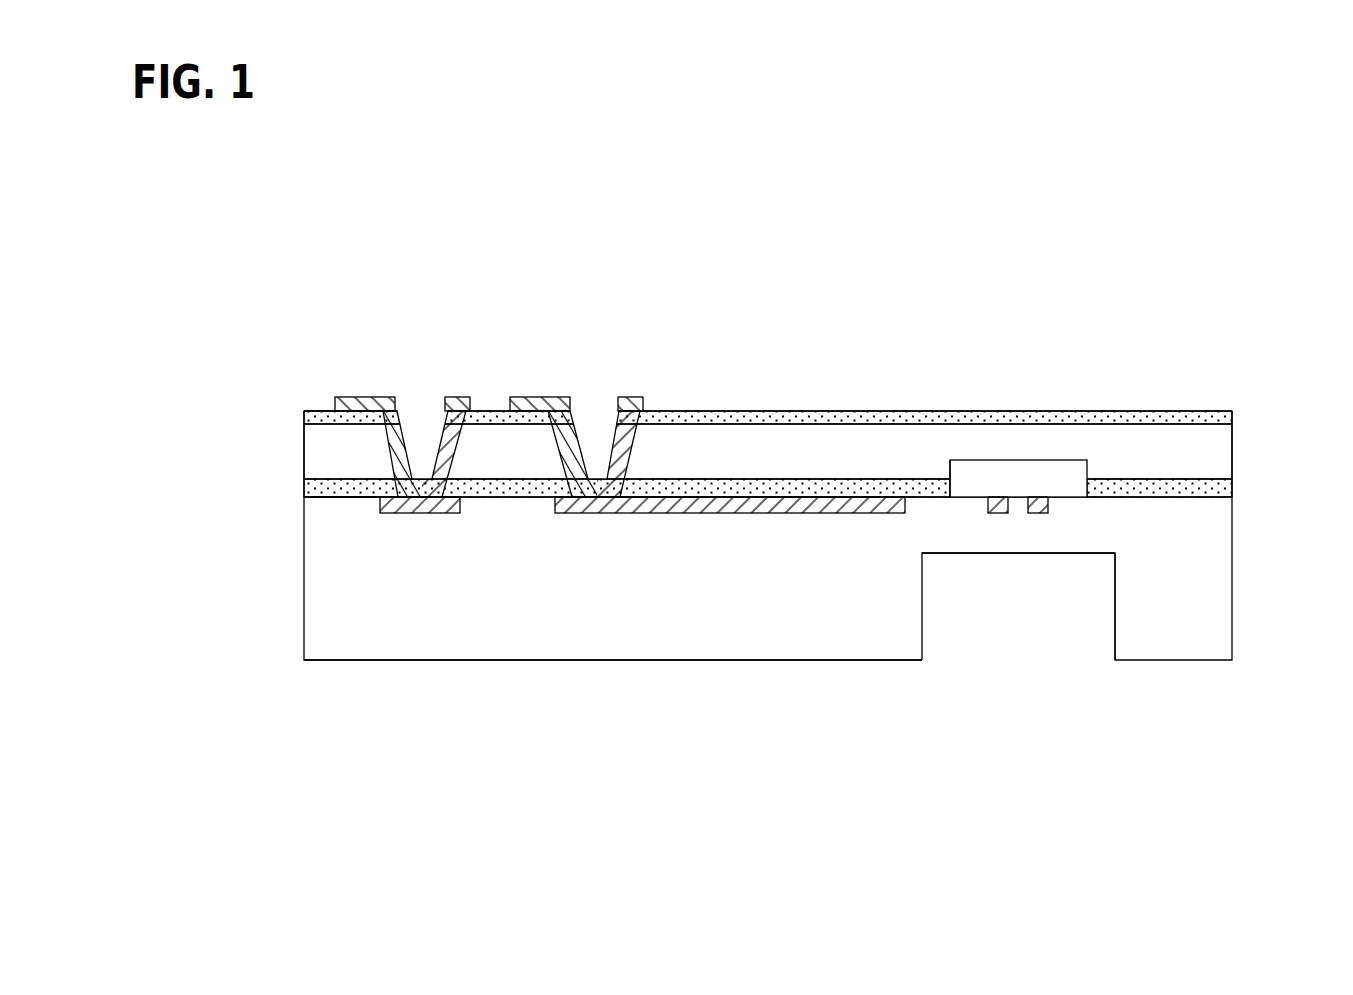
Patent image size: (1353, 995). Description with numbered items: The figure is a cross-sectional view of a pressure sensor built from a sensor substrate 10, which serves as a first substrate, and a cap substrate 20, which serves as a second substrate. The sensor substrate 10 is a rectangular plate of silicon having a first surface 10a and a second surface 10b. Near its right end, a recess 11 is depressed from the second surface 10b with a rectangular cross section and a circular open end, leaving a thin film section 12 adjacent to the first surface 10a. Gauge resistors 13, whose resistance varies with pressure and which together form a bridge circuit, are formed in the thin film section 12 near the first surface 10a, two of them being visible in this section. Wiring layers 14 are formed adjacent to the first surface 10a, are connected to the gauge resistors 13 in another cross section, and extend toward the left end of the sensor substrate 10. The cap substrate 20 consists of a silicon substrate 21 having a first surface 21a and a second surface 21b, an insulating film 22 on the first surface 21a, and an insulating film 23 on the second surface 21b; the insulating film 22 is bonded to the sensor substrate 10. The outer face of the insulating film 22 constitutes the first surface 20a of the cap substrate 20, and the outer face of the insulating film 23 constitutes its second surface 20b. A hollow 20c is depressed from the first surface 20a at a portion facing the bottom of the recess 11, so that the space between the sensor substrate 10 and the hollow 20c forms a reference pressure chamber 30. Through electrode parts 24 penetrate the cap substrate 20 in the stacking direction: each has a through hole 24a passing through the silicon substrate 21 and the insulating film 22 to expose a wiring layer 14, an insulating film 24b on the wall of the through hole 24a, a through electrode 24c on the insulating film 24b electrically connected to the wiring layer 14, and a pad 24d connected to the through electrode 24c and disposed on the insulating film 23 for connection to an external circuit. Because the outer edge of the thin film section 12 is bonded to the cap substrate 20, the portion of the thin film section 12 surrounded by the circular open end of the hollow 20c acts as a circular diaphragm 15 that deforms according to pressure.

The sensor substrate 10 is at (712, 557).
The first surface 10a is at (304, 488).
The second surface 10b is at (322, 660).
The recess 11 is at (1115, 635).
The thin film section 12 is at (990, 580).
The gauge resistors 13 is at (1007, 503).
The wiring layers 14 is at (372, 490).
The diaphragm 15 is at (1025, 532).
The cap substrate 20 is at (765, 396).
The first surface 20a is at (342, 508).
The second surface 20b is at (320, 413).
The hollow 20c is at (953, 490).
The silicon substrate 21 is at (1213, 450).
The first surface 21a is at (1193, 482).
The second surface 21b is at (1208, 418).
The insulating film 22 is at (1223, 490).
The insulating film 23 is at (1215, 410).
The through electrode parts 24 is at (586, 387).
The through hole 24a is at (636, 442).
The insulating film 24b is at (612, 448).
The through electrode 24c is at (575, 443).
The pad 24d is at (525, 407).
The reference pressure chamber 30 is at (1040, 483).